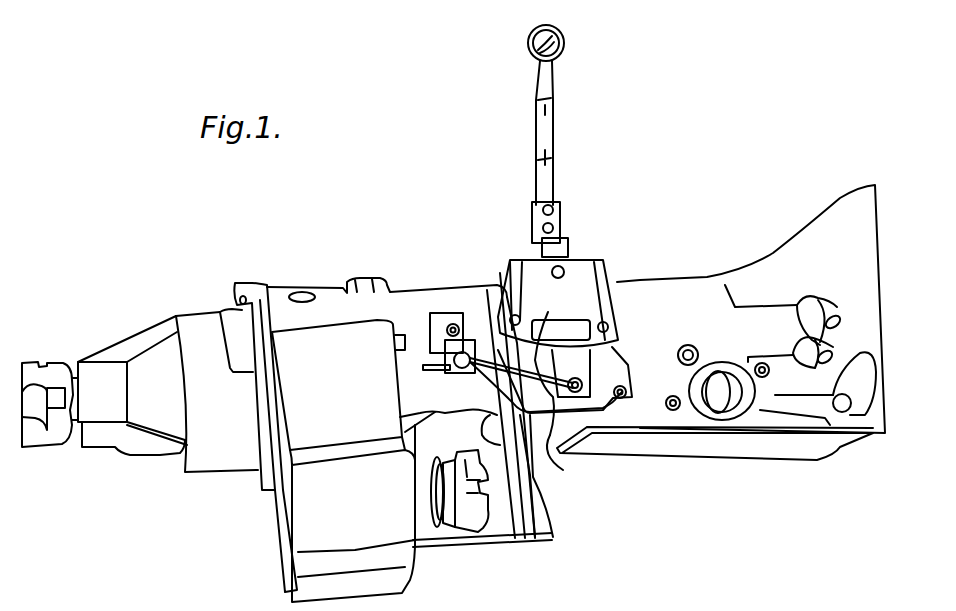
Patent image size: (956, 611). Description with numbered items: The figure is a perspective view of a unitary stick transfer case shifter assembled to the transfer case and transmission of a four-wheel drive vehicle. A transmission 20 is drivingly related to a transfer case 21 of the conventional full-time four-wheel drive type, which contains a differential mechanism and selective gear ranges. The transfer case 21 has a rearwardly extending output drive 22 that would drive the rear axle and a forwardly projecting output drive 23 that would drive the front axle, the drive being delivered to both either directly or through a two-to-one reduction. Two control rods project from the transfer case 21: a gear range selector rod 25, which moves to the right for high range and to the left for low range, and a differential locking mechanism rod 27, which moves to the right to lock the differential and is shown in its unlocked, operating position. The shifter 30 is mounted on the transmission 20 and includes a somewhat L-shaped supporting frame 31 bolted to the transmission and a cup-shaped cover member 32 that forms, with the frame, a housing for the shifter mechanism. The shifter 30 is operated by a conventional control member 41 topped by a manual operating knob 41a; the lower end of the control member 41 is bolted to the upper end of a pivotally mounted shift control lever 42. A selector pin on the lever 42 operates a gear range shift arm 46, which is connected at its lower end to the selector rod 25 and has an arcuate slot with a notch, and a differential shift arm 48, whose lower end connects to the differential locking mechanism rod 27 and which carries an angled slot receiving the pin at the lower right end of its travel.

The transmission 20 is at (787, 258).
The transfer case 21 is at (283, 285).
The rearwardly extending output drive 22 is at (47, 362).
The forwardly projecting output drive 23 is at (483, 510).
The gear range selector rod 25 is at (548, 360).
The differential locking mechanism rod 27 is at (567, 462).
The shifter 30 is at (590, 178).
The supporting frame 31 is at (495, 275).
The cup-shaped cover member 32 is at (598, 268).
The control member 41 is at (555, 118).
The manual operating knob 41a is at (556, 48).
The shift control lever 42 is at (565, 238).
The gear range shift arm 46 is at (613, 350).
The differential shift arm 48 is at (625, 373).